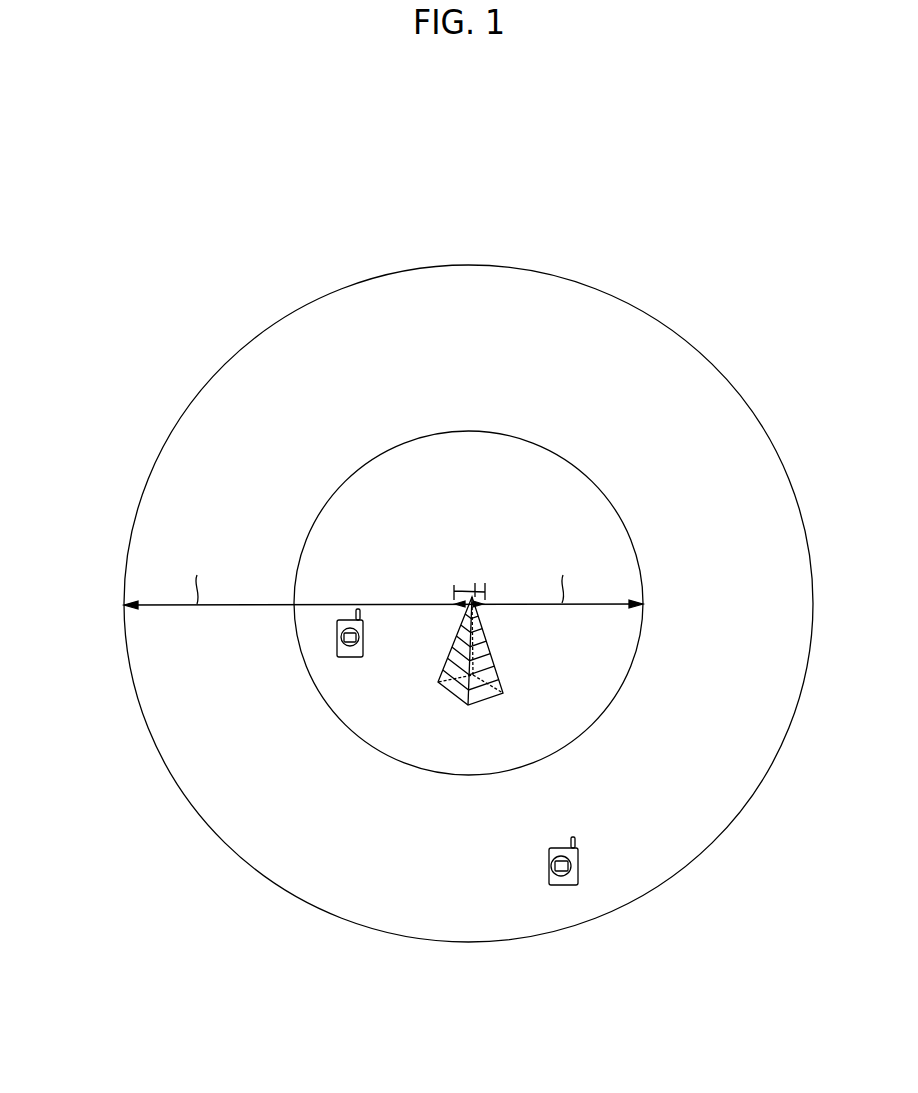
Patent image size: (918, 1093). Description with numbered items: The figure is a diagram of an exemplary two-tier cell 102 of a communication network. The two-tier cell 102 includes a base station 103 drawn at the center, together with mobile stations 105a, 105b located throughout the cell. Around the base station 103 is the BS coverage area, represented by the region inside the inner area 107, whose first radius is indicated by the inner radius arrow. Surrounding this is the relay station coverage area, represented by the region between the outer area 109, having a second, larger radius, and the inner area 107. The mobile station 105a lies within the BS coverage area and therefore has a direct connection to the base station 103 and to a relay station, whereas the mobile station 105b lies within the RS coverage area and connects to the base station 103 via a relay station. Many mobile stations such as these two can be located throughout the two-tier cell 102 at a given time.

The two-tier cell 102 is at (670, 246).
The base station 103 is at (492, 657).
The mobile station 105a is at (363, 634).
The mobile station 105b is at (578, 862).
The area 107 is at (586, 471).
The area 109 is at (702, 346).